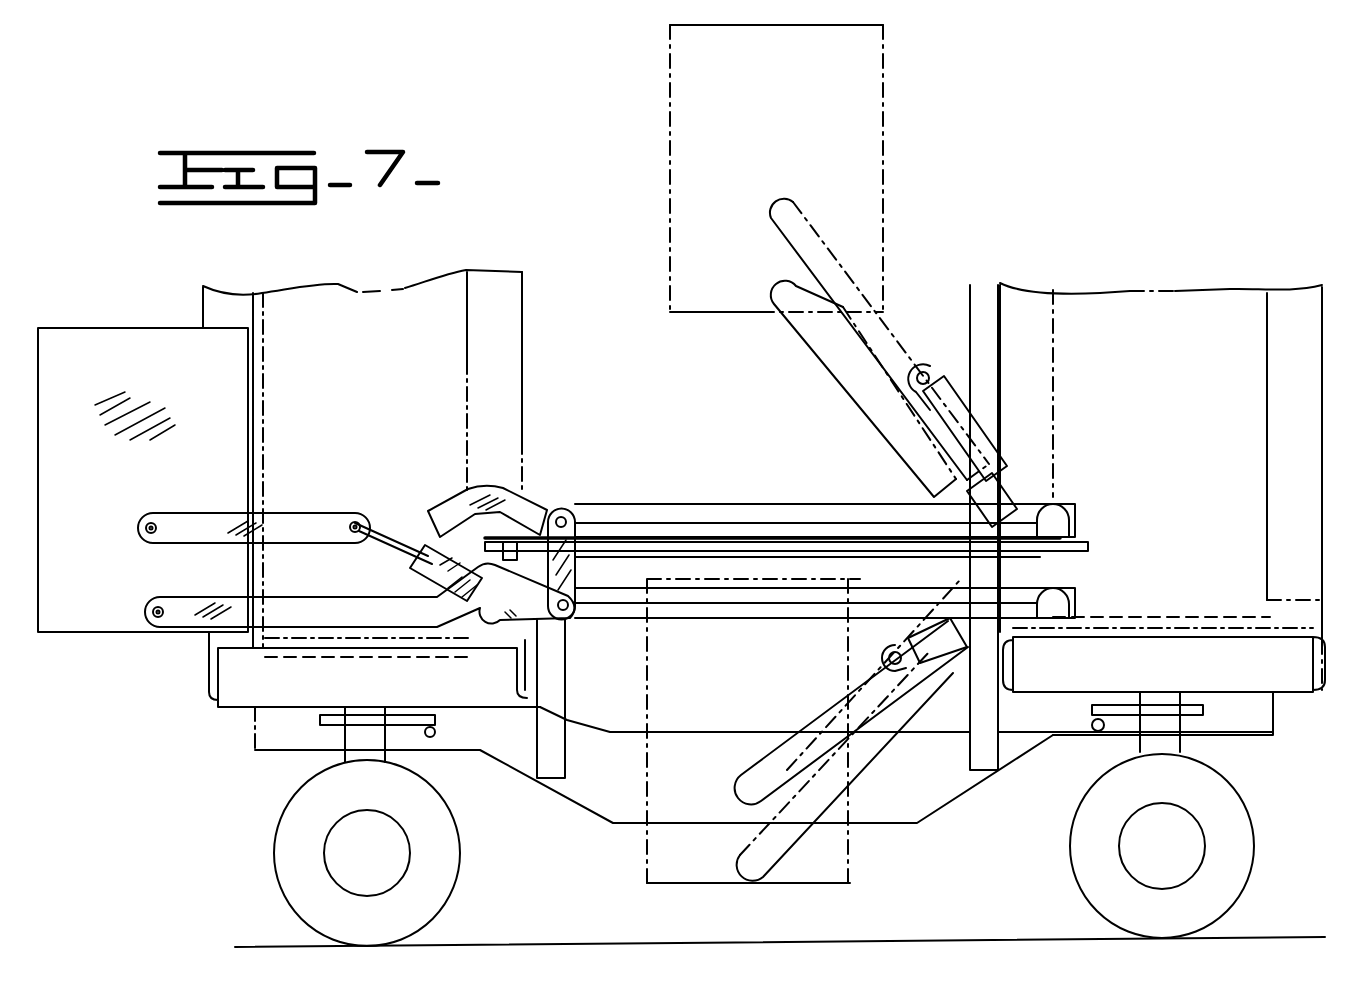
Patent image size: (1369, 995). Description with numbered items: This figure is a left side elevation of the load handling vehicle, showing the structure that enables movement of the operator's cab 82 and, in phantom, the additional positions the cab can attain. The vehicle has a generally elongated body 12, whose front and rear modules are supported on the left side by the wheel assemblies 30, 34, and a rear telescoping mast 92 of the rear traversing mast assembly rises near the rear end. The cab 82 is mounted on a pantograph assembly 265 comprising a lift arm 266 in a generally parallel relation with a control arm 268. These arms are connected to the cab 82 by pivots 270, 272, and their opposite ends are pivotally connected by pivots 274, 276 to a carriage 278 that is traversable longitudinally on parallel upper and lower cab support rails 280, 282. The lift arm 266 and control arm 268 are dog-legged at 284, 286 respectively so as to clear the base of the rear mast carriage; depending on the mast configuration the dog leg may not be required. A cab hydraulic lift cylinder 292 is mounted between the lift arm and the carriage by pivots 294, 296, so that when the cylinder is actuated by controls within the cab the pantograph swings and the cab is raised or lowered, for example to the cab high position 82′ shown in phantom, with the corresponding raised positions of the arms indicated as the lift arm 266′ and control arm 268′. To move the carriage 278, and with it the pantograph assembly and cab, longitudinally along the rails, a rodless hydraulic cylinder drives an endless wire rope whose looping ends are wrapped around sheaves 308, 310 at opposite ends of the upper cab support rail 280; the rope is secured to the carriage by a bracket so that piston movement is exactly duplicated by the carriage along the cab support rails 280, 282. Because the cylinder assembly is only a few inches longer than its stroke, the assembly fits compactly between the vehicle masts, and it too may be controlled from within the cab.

The body 12 is at (543, 788).
The left wheel assembly 30 is at (270, 889).
The left wheel assembly 34 is at (1250, 893).
The operator cab 82 is at (245, 352).
The cab high position 82′ is at (880, 142).
The rear telescoping mast 92 is at (1300, 292).
The lift linkage 265 is at (354, 556).
The lift arm 266 is at (222, 536).
The upper link arm in raised position 266′ is at (888, 318).
The control arm 268 is at (327, 598).
The lower link arm in raised position 268′ is at (837, 372).
The pivot 270 is at (143, 527).
The pivot 272 is at (143, 611).
The pivot 274 is at (566, 513).
The pivot 276 is at (570, 621).
The carriage 278 is at (542, 530).
The upper cab support rail 280 is at (722, 510).
The lower cab support rail 282 is at (838, 592).
The dog leg 284 is at (495, 486).
The dog leg 286 is at (497, 607).
The cab hydraulic lift cylinder 292 is at (440, 572).
The pivot 294 is at (353, 484).
The pivot 296 is at (573, 588).
The sheave 308 is at (458, 534).
The sheave 310 is at (1080, 537).